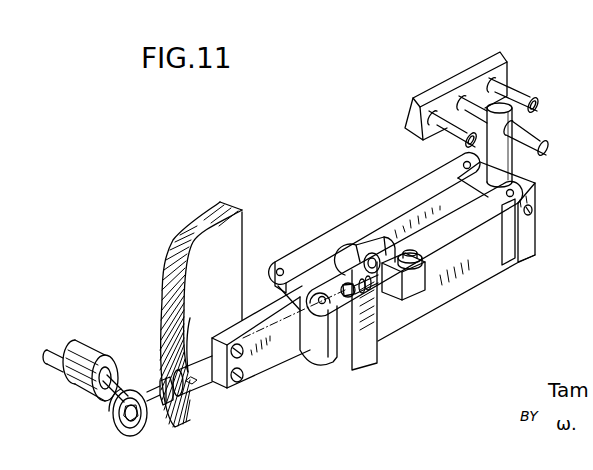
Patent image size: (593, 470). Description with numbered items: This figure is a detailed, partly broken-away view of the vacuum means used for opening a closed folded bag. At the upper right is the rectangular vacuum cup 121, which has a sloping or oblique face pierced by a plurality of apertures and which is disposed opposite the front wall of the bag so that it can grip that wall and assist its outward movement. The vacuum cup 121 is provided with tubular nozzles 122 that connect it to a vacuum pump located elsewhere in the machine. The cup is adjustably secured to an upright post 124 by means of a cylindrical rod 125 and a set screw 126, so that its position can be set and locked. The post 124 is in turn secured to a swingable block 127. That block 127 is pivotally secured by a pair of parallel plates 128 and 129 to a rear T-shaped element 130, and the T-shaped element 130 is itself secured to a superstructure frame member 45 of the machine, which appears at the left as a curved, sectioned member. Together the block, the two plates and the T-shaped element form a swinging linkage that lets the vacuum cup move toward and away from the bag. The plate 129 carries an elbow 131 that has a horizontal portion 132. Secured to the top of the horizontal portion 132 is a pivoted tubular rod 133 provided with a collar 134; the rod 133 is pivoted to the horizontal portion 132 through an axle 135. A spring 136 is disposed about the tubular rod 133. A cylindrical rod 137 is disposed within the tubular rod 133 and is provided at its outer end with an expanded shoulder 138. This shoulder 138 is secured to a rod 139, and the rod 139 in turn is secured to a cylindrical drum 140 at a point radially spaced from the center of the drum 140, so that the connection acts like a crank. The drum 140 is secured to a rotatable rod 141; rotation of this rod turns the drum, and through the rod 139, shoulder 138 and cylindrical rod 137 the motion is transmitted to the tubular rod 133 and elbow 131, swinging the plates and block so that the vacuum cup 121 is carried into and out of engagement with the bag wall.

The superstructure frame member 45 is at (233, 263).
The rectangular vacuum cup 121 is at (501, 53).
The tubular nozzles 122 is at (515, 86).
The post 124 is at (514, 163).
The cylindrical rod 125 is at (532, 130).
The set screw 126 is at (480, 138).
The swingable block 127 is at (531, 212).
The parallel plate 128 is at (376, 220).
The parallel plate 129 is at (480, 268).
The rear T-shaped element 130 is at (268, 364).
The elbow 131 is at (378, 364).
The horizontal portion 132 is at (418, 288).
The pivoted tubular rod 133 is at (344, 251).
The collar 134 is at (372, 292).
The axle 135 is at (422, 256).
The spring 136 is at (190, 322).
The cylindrical rod 137 is at (167, 408).
The expanded shoulder 138 is at (115, 422).
The rod 139 is at (108, 394).
The cylindrical drum 140 is at (100, 352).
The rotatable rod 141 is at (92, 347).